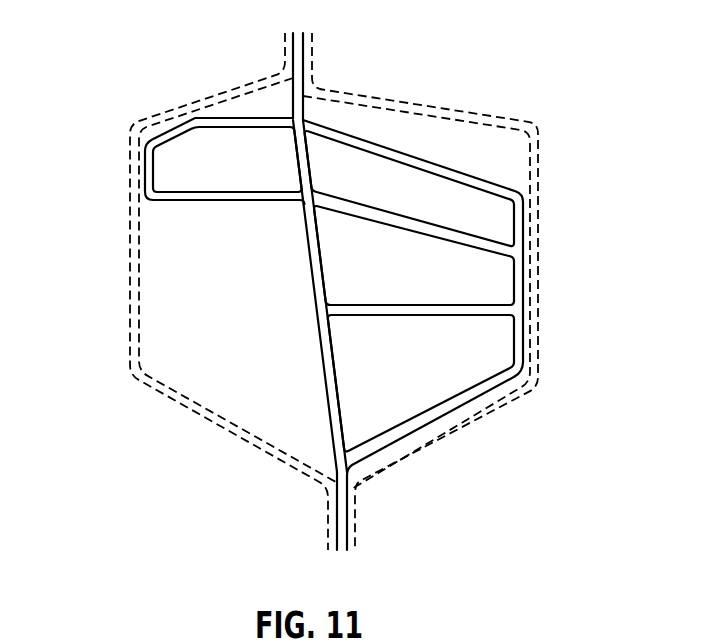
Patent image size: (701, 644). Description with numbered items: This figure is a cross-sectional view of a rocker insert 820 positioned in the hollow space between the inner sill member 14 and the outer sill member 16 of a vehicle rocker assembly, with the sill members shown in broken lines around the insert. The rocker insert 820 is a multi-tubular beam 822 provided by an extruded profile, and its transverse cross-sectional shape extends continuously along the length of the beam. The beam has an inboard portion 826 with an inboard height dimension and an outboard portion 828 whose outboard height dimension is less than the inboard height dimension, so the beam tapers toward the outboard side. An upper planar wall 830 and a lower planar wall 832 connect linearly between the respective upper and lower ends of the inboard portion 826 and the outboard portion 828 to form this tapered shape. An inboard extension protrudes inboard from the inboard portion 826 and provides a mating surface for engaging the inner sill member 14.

The rocker insert 820 is at (138, 95).
The inner sill member 14 is at (203, 100).
The outer sill member 16 is at (497, 110).
The upper planar wall 830 is at (372, 143).
The multi-tubular beam 822 is at (482, 170).
The outboard portion 828 is at (525, 282).
The lower planar wall 832 is at (448, 412).
The inboard portion 826 is at (297, 268).